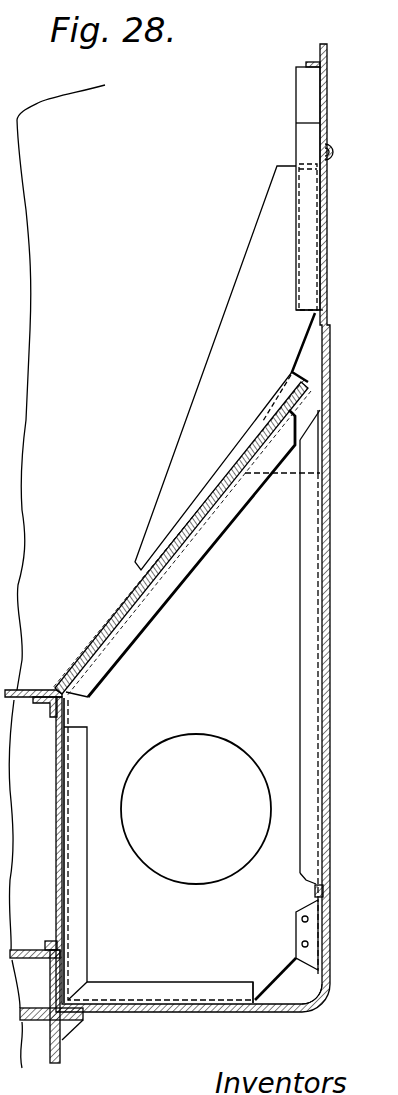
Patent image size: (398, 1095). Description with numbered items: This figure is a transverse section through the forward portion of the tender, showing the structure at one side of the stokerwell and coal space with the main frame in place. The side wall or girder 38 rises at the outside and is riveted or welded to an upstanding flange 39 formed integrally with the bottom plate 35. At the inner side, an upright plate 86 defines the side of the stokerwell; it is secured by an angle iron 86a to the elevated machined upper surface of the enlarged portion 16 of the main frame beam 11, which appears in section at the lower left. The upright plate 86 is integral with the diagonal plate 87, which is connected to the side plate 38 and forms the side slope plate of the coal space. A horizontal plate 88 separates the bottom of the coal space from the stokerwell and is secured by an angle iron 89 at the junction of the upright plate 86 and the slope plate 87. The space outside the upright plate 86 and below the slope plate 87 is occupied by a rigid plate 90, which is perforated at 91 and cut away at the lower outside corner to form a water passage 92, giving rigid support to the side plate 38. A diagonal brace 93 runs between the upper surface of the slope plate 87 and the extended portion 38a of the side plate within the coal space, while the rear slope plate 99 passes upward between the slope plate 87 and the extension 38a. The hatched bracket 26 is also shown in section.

The rear slope plate 99 is at (134, 144).
The side wall 38 is at (328, 570).
The extended portion of the side plate 38a is at (318, 226).
The diagonal brace 93 is at (245, 328).
The diagonal plate 87 is at (135, 596).
The horizontal plate 88 is at (22, 690).
The angle iron 89 is at (55, 699).
The rigid plate 90 is at (195, 688).
The perforation 91 is at (200, 744).
The upright plate 86 is at (60, 845).
The angle iron 86a is at (55, 944).
The enlarged portion of the main frame beam 16 is at (27, 950).
The bracket 26 is at (86, 1014).
The main frame beam 11 is at (70, 1056).
The upstanding flange 39 is at (320, 930).
The bottom plate 35 is at (232, 1006).
The water passage 92 is at (297, 990).